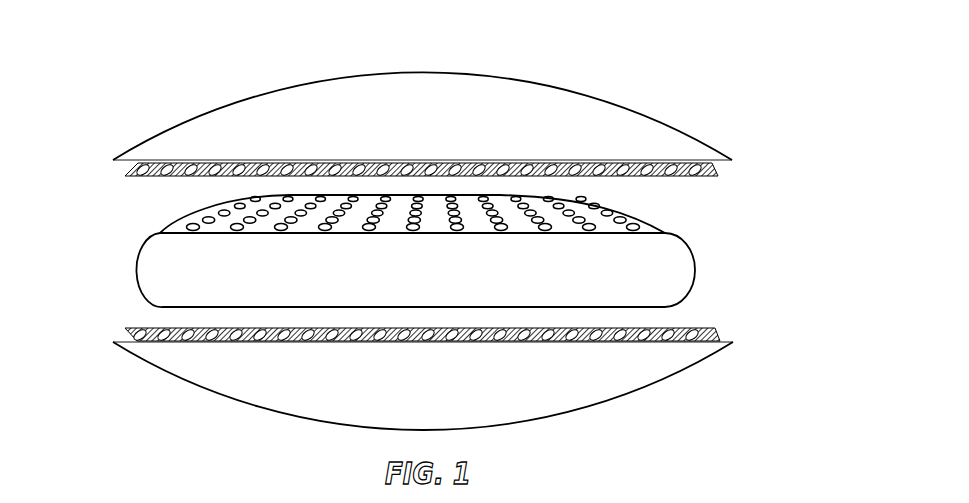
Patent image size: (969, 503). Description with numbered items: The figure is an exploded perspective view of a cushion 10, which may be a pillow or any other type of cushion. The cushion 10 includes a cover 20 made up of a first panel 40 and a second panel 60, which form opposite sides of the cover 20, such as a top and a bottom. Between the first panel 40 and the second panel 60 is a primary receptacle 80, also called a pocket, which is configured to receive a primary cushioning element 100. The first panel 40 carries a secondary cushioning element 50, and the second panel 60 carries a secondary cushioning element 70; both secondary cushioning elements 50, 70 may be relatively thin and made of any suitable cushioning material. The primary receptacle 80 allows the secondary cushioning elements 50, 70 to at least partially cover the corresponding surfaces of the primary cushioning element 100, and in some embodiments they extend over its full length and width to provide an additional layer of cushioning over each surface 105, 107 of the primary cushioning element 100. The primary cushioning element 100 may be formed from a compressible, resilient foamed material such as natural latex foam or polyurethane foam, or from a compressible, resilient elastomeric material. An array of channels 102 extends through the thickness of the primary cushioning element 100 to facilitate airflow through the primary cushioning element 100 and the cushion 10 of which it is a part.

The cushion 10 is at (130, 64).
The cover 20 is at (55, 113).
The first panel 40 is at (143, 126).
The secondary cushioning element 50 is at (718, 169).
The primary receptacle 80 is at (144, 195).
The channels 102 is at (600, 207).
The surface 105 is at (655, 230).
The primary cushioning element 100 is at (682, 267).
The surface 107 is at (660, 308).
The secondary cushioning element 70 is at (718, 331).
The second panel 60 is at (129, 367).